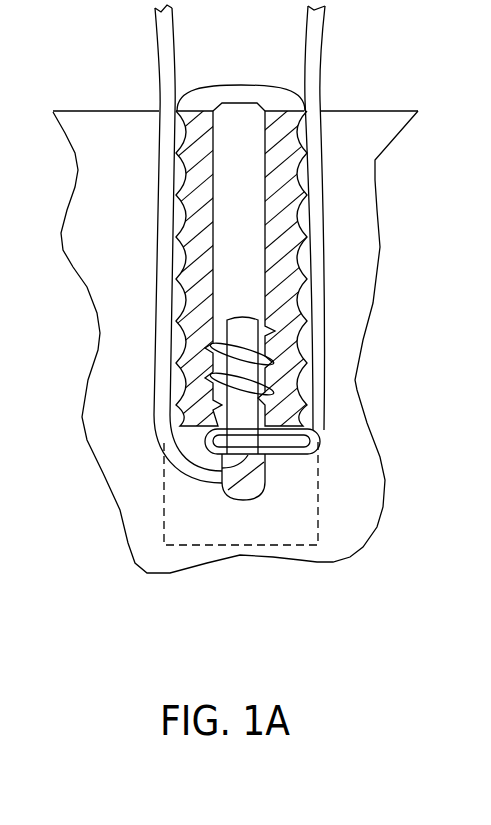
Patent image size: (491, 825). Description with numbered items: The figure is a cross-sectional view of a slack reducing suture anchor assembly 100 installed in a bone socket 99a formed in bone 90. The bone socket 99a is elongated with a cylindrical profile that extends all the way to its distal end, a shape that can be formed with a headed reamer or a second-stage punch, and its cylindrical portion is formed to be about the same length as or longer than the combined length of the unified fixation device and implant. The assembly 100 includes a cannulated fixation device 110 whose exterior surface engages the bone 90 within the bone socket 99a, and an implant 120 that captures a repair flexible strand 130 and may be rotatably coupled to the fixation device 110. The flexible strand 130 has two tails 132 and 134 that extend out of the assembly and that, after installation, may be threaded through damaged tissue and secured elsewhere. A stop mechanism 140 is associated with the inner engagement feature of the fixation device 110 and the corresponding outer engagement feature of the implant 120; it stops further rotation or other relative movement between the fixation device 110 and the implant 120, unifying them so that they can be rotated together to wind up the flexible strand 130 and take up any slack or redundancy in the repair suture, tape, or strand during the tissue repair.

The suture anchor assembly 100 is at (348, 96).
The cannulated fixation device 110 is at (285, 212).
The implant 120 is at (250, 413).
The repair flexible strand 130 is at (164, 173).
The tail 132 is at (170, 53).
The tail 134 is at (310, 45).
The stop mechanism 140 is at (263, 318).
The bone 90 is at (135, 396).
The bone socket 99a is at (300, 506).